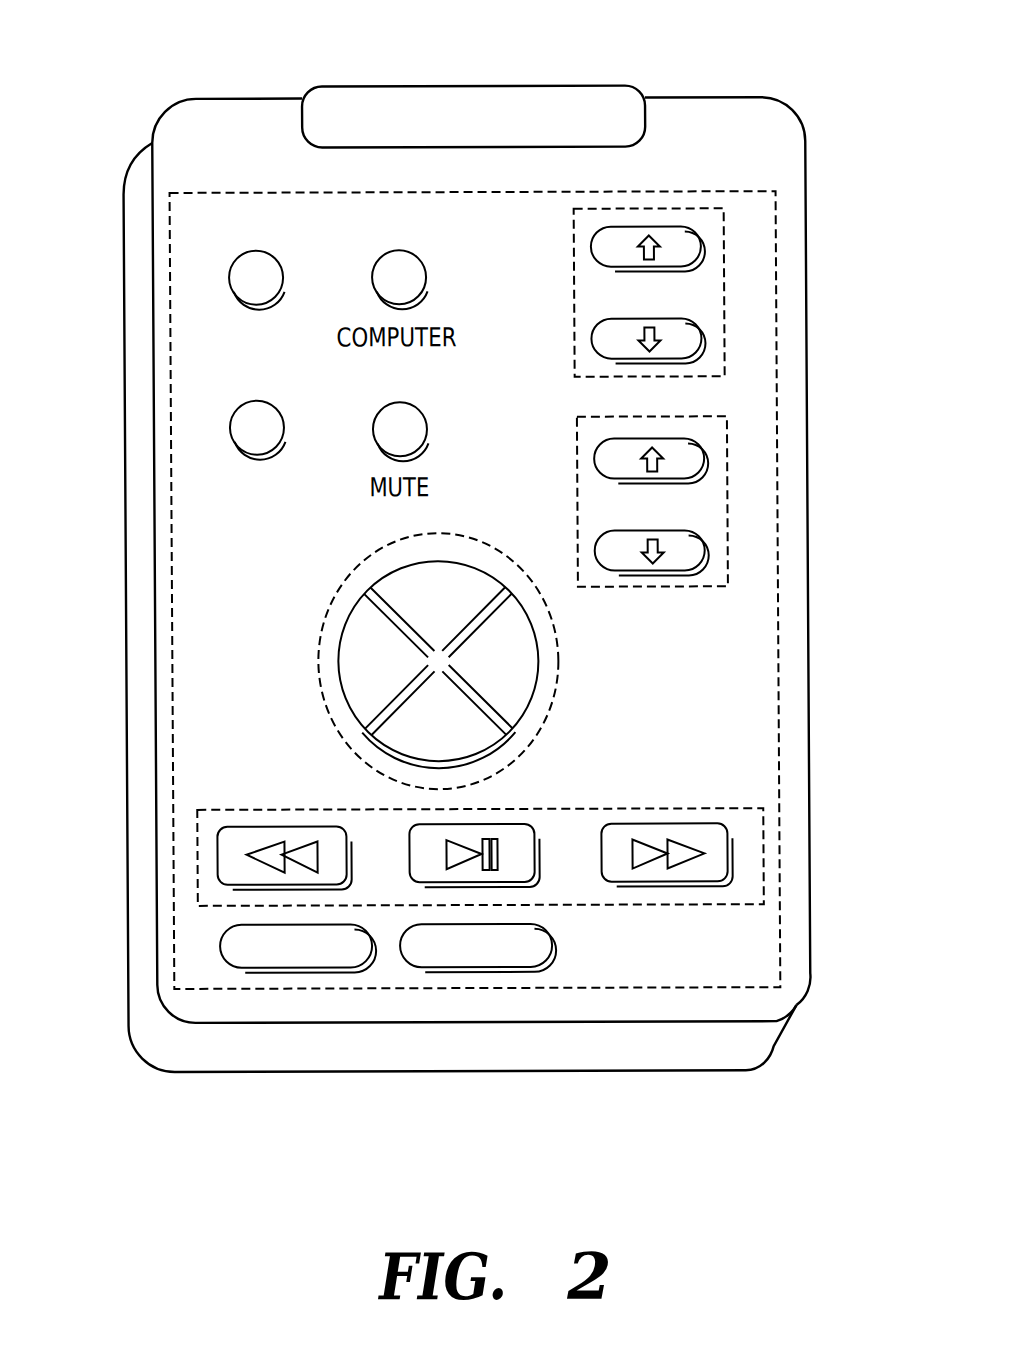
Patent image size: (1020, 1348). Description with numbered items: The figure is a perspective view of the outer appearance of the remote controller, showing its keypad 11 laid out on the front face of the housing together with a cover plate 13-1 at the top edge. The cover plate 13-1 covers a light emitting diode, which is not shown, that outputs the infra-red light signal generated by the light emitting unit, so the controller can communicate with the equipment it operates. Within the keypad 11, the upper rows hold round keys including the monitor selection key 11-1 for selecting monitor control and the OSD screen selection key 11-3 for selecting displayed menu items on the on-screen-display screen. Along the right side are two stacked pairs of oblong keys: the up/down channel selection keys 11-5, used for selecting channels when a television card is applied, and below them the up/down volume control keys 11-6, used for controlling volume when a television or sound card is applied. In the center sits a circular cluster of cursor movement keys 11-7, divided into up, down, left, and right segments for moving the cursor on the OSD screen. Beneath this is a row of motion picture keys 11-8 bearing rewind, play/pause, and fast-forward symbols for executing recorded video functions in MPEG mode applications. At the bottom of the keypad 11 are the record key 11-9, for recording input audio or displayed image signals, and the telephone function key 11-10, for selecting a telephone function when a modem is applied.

The cover plate 13-1 is at (409, 95).
The keypad 11 is at (169, 237).
The monitor selection key 11-1 is at (228, 282).
The OSD screen selection key 11-3 is at (228, 433).
The up/down channel selection keys 11-5 is at (725, 335).
The up/down volume control keys 11-6 is at (725, 487).
The cursor movement keys 11-7 is at (315, 668).
The motion picture keys 11-8 is at (193, 857).
The record key 11-9 is at (265, 972).
The telephone function key 11-10 is at (477, 972).